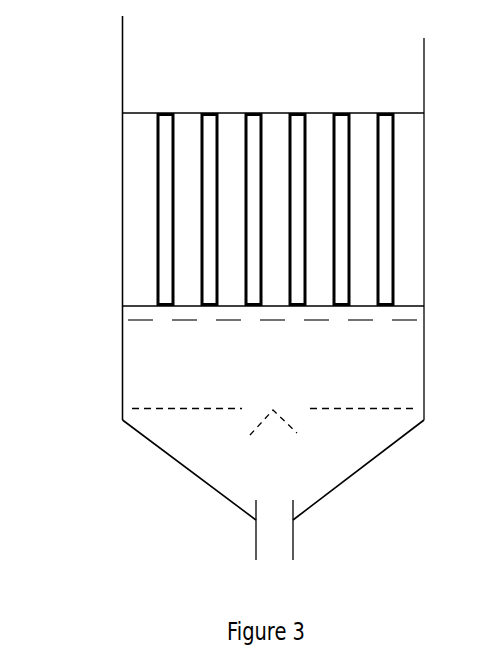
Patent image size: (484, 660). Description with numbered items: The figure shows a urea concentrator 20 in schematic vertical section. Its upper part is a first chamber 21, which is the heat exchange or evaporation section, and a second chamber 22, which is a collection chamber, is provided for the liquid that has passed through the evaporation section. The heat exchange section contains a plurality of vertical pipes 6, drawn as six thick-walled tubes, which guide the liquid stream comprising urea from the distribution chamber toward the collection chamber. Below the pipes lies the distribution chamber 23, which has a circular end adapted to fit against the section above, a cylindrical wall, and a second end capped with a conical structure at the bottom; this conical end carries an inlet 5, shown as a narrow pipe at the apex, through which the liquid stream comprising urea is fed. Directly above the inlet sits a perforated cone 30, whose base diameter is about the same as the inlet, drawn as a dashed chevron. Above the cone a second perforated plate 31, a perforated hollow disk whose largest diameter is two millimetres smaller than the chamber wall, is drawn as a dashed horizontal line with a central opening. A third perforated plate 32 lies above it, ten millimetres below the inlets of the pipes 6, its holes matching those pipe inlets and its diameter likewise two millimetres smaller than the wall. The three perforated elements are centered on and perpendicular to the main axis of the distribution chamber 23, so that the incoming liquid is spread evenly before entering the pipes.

The urea concentrator 20 is at (249, 268).
The second chamber 22 is at (139, 64).
The first chamber 21 is at (143, 150).
The pipes 6 is at (275, 210).
The third perforated plate 32 is at (273, 332).
The distribution chamber 23 is at (147, 349).
The second perforated plate 31 is at (272, 392).
The perforated cone 30 is at (283, 438).
The inlet 5 is at (285, 539).